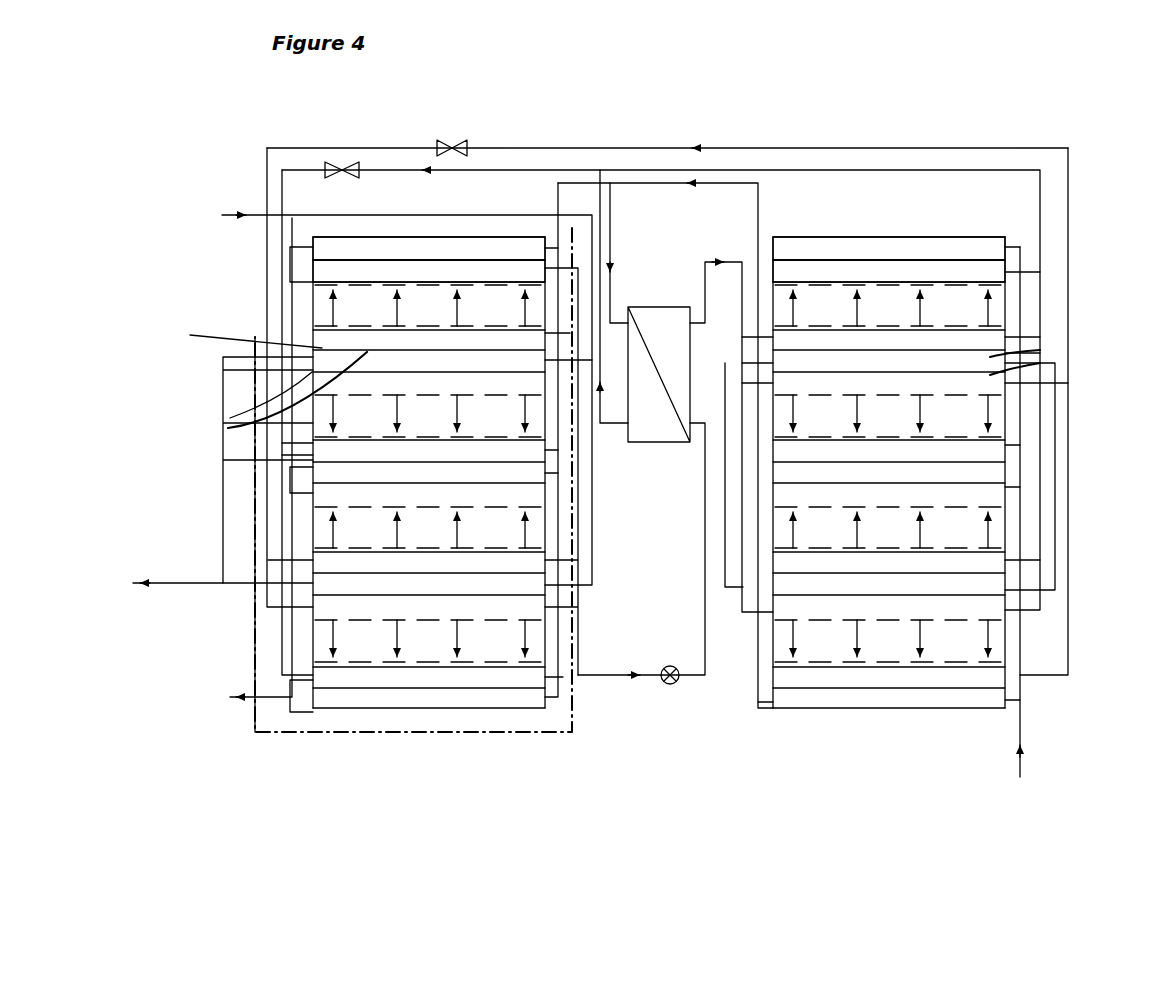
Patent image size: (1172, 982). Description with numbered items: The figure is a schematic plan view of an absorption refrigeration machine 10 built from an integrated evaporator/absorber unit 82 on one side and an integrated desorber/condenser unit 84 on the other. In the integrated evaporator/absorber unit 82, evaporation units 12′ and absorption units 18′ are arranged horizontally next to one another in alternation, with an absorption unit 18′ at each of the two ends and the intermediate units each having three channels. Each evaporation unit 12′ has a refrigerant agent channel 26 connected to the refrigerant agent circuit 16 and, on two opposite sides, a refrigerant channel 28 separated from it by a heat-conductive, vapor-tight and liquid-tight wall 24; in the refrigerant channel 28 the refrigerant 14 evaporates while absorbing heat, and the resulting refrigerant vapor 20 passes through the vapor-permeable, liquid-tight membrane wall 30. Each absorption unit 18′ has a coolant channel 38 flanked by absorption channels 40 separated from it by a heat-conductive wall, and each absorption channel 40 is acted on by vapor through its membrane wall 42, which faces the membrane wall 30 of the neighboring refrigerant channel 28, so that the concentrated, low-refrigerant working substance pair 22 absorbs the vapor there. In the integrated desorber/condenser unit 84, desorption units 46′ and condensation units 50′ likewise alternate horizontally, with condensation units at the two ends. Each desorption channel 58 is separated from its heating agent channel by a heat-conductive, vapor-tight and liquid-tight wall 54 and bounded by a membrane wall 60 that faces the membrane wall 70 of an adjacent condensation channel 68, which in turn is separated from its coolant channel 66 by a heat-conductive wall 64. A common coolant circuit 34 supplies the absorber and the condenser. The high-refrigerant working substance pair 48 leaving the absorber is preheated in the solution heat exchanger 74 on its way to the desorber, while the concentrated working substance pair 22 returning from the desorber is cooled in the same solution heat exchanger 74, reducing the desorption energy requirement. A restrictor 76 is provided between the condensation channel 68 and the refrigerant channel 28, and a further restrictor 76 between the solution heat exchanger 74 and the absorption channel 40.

The absorption refrigeration machine 10 is at (589, 98).
The evaporation unit 12′ is at (300, 370).
The refrigerant 14 is at (662, 148).
The refrigerant agent circuit 16 is at (222, 215).
The absorption unit 18′ is at (300, 258).
The refrigerant vapor 20 is at (336, 300).
The concentrated, low-refrigerant working substance pair 22 is at (606, 437).
The heat-conductive, vapor-tight and liquid-tight wall 24 is at (247, 412).
The refrigerant agent channel 26 is at (230, 333).
The refrigerant channel 28 is at (330, 330).
The vapor-permeable, liquid-tight membrane wall 30 is at (365, 642).
The common coolant circuit 34 is at (655, 185).
The coolant channel 38 is at (462, 228).
The absorption channel 40 is at (372, 268).
The vapor-permeable, liquid-tight membrane wall 42 is at (421, 676).
The desorption unit 46′ is at (1016, 335).
The high-refrigerant working substance pair 48 is at (722, 258).
The condensation unit 50′ is at (1018, 240).
The heat-conductive, vapor-tight and liquid-tight wall 54 is at (1048, 360).
The desorption channel 58 is at (950, 330).
The vapor-permeable, liquid-tight membrane wall 60 is at (958, 634).
The heat-conductive, vapor-tight and liquid-tight wall 64 is at (796, 262).
The coolant channel 66 is at (868, 247).
The condensation channel 68 is at (912, 275).
The vapor-permeable, liquid-tight membrane wall 70 is at (821, 290).
The solution heat exchanger 74 is at (666, 442).
The restrictor 76 is at (348, 157).
The integrated evaporator/absorber unit 82 is at (300, 755).
The integrated desorber/condenser unit 84 is at (853, 793).